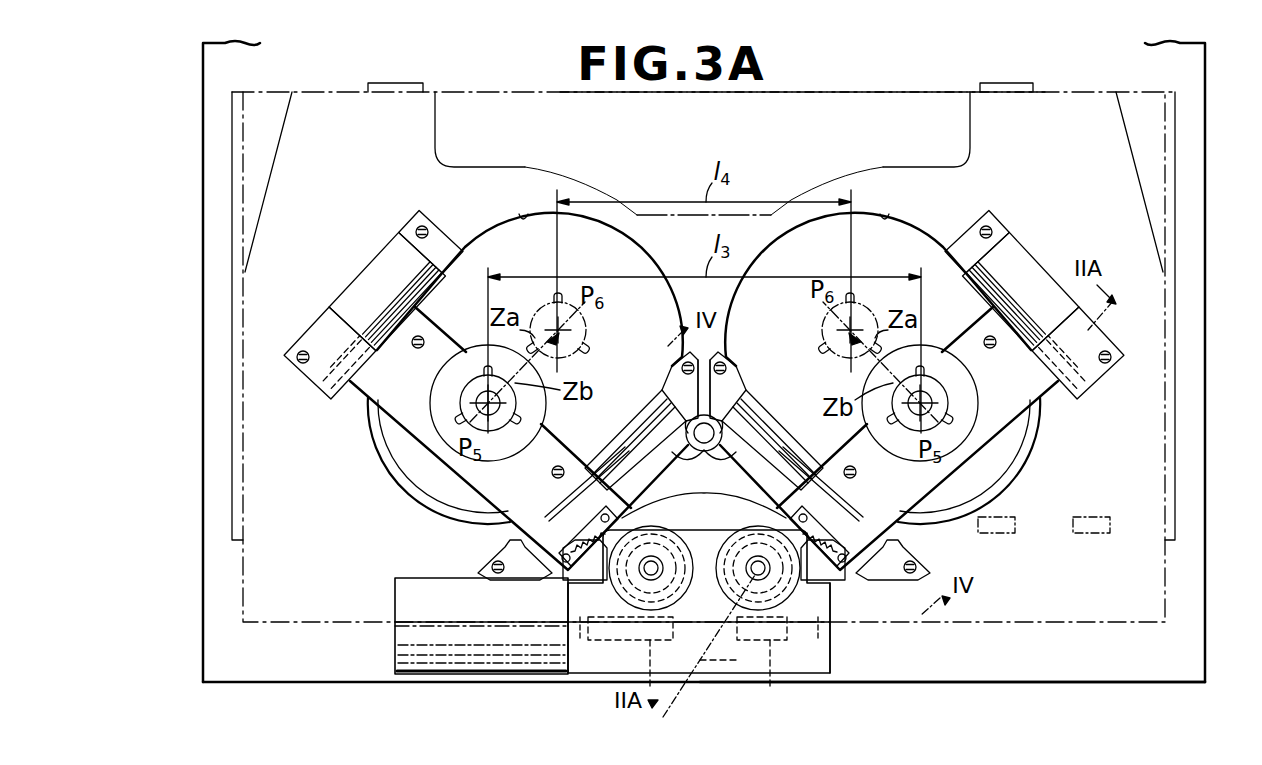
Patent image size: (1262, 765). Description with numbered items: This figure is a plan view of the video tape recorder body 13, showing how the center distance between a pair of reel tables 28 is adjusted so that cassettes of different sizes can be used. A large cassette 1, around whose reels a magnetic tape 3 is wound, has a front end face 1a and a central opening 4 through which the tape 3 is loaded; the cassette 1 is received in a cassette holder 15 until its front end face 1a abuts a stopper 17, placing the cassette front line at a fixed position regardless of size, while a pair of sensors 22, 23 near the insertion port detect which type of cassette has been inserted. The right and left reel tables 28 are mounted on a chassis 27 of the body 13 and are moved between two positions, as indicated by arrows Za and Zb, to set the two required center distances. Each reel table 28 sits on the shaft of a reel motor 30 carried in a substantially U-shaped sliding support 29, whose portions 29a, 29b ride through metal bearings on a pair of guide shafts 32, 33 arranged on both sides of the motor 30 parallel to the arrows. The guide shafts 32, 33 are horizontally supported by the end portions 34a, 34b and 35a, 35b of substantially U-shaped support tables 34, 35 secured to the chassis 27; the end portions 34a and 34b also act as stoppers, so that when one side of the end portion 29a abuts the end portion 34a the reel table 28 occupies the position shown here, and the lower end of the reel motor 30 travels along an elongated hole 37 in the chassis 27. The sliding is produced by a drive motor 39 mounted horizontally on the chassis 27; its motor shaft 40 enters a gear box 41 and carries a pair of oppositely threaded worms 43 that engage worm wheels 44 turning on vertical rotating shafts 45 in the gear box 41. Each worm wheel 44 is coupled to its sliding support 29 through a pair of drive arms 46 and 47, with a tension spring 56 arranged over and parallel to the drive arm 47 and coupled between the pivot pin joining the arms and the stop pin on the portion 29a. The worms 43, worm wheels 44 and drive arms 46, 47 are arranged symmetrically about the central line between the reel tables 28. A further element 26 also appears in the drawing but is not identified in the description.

The large cassette 1 is at (1068, 625).
The front end face 1a is at (312, 90).
The magnetic tape 3 is at (768, 92).
The opening 4 is at (796, 120).
The video tape recorder body 13 is at (1210, 455).
The cassette holder 15 is at (237, 378).
The stopper 17 is at (408, 84).
The sensor 22 is at (1103, 535).
The sensor 23 is at (1008, 535).
The drive unit 26 is at (840, 652).
The chassis 27 is at (1152, 684).
The reel table 28 is at (590, 323).
The sliding support 29 is at (402, 412).
The end portion of sliding support 29a is at (704, 509).
The portion of sliding support 29b is at (322, 327).
The reel motor 30 is at (407, 468).
The guide shaft 32 is at (642, 440).
The guide shaft 33 is at (402, 283).
The support table 34 is at (700, 458).
The end portion of support table 34a is at (497, 552).
The end portion of support table 34b is at (665, 385).
The support table 35 is at (362, 283).
The end portion of support table 35a is at (302, 380).
The end portion of support table 35b is at (445, 238).
The elongated hole 37 is at (523, 212).
The drive motor 39 is at (483, 662).
The motor shaft 40 is at (585, 640).
The gear box 41 is at (745, 665).
The worm 43 is at (640, 650).
The worm wheel 44 is at (600, 600).
The rotating shaft 45 is at (754, 572).
The drive arm 46 is at (567, 586).
The drive arm 47 is at (577, 533).
The tension spring 56 is at (595, 520).